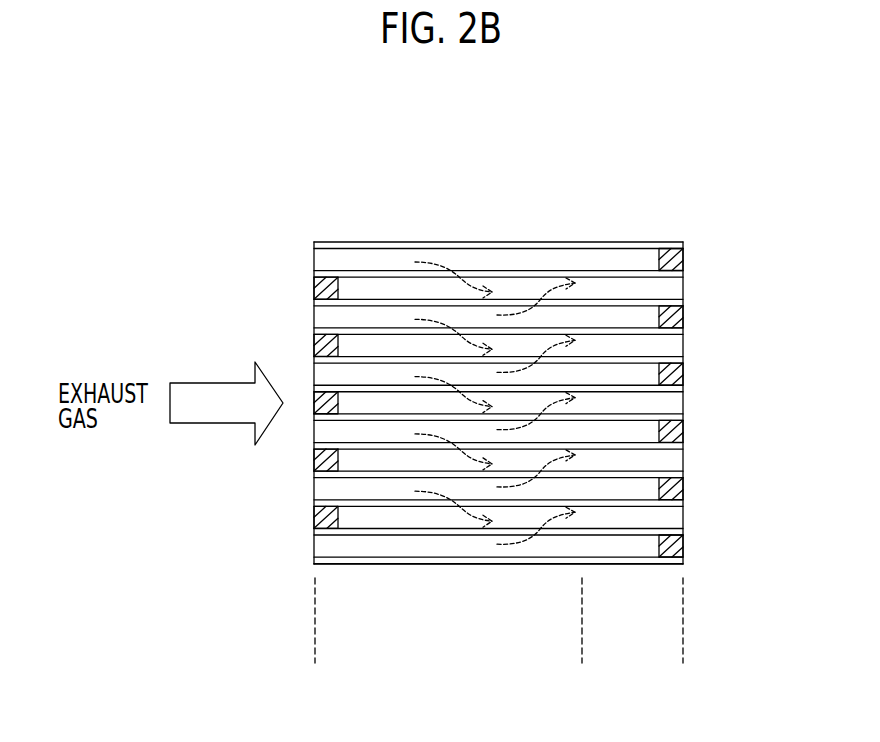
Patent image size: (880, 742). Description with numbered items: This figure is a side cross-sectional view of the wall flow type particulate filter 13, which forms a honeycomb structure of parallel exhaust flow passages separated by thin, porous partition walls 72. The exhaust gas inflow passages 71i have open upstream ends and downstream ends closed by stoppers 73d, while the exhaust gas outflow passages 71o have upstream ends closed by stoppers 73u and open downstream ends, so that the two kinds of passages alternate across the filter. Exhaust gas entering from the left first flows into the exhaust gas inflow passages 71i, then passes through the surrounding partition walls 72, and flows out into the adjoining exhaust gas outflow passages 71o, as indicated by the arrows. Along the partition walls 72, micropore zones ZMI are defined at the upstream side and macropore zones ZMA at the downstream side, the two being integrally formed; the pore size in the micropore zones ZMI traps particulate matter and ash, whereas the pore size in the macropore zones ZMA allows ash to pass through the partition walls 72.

The particulate filter 13 is at (641, 131).
The exhaust gas outflow passage 71o is at (370, 342).
The exhaust gas inflow passage 71i is at (388, 488).
The partition wall 72 is at (537, 273).
The stopper 73u is at (316, 346).
The stopper 73d is at (682, 316).
The micropore zone ZMI is at (582, 633).
The macropore zone ZMA is at (582, 633).